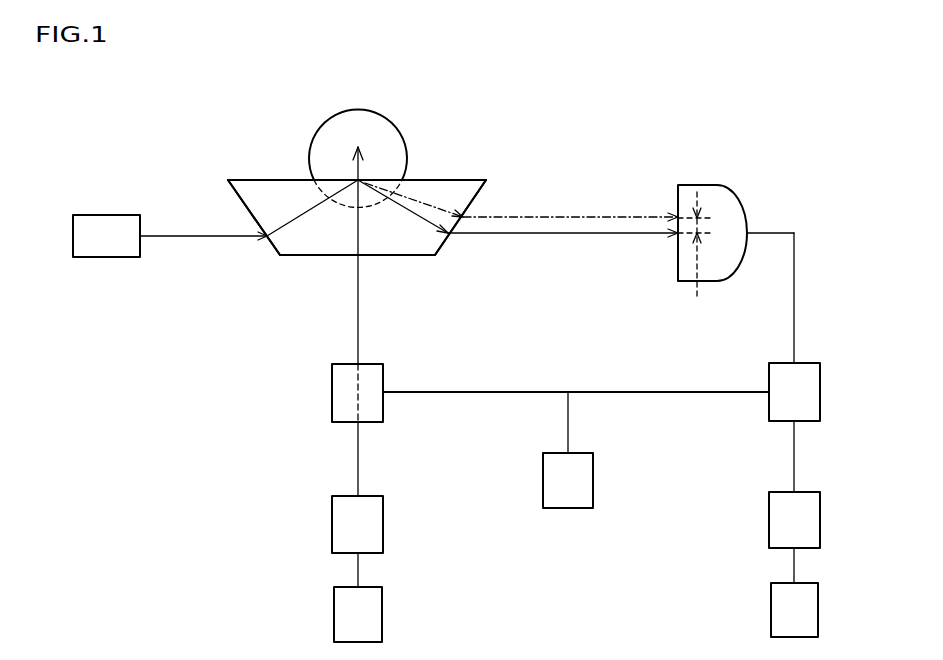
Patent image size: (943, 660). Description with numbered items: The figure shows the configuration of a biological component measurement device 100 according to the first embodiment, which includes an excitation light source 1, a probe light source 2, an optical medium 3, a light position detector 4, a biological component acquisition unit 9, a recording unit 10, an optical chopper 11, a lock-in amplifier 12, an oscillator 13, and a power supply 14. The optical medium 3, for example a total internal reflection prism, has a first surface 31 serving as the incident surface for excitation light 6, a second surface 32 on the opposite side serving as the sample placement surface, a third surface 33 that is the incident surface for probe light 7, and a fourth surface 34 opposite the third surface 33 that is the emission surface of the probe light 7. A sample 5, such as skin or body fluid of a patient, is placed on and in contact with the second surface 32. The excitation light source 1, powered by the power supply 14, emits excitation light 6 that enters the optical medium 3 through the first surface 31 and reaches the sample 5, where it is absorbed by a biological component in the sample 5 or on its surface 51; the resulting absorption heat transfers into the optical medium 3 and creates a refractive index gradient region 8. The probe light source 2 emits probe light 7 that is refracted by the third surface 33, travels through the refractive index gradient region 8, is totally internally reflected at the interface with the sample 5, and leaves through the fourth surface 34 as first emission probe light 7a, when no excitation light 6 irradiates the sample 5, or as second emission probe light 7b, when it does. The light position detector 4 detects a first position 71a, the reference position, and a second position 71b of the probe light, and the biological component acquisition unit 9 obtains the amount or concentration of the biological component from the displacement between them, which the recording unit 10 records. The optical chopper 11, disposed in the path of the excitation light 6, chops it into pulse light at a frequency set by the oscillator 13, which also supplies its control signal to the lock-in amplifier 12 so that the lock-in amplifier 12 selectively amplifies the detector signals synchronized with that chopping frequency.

The biological component measurement device 100 is at (794, 91).
The excitation light source 1 is at (383, 530).
The probe light source 2 is at (116, 215).
The optical medium 3 is at (292, 245).
The first surface 31 is at (413, 256).
The second surface 32 is at (443, 178).
The third surface 33 is at (240, 198).
The fourth surface 34 is at (481, 187).
The light position detector 4 is at (703, 185).
The sample 5 is at (383, 110).
The surface of sample 51 is at (313, 191).
The excitation light 6 is at (358, 453).
The probe light 7 is at (188, 237).
The first emission probe light 7a is at (590, 234).
The second emission probe light 7b is at (602, 217).
The first position 71a is at (677, 234).
The second position 71b is at (677, 217).
The refractive index gradient region 8 is at (340, 206).
The biological component acquisition unit 9 is at (769, 525).
The recording unit 10 is at (771, 612).
The optical chopper 11 is at (383, 375).
The lock-in amplifier 12 is at (769, 375).
The oscillator 13 is at (568, 508).
The power supply 14 is at (382, 617).